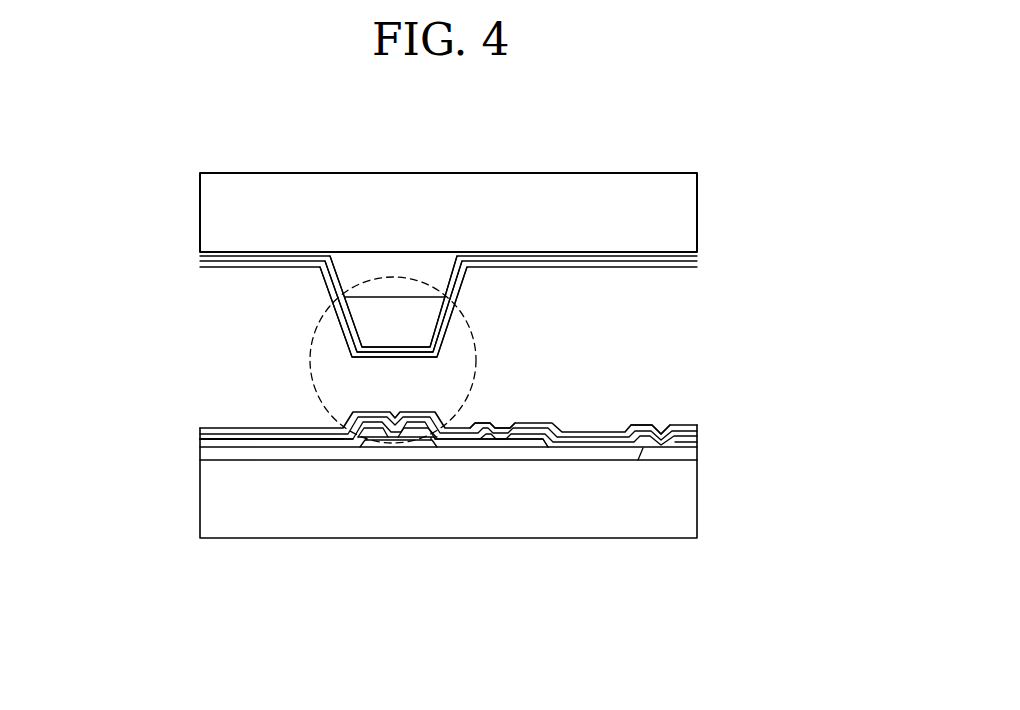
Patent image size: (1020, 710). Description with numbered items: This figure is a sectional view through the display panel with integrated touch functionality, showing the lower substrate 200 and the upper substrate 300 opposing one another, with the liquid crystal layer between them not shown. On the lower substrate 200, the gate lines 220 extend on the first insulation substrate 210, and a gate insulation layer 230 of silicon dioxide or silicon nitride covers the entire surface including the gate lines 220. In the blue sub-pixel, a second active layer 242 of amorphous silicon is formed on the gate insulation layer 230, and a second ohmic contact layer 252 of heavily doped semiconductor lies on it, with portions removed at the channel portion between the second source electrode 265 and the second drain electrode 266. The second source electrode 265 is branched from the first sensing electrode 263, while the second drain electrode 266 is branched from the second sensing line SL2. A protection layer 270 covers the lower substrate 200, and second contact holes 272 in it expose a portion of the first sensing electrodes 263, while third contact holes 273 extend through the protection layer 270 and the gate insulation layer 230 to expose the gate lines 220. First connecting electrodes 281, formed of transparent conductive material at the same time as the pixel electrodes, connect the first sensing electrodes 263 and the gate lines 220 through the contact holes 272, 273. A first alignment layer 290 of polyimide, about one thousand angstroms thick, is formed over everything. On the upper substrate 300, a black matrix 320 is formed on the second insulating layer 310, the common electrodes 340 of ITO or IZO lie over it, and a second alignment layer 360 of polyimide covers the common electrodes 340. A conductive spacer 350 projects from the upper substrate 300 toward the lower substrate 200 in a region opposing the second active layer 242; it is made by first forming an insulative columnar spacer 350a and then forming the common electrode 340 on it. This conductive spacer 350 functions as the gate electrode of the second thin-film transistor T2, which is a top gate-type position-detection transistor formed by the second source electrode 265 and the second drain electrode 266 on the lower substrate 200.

The upper substrate 300 is at (496, 233).
The second insulating layer 310 is at (685, 190).
The black matrix 320 is at (698, 252).
The common electrodes 340 is at (698, 259).
The second alignment layer 360 is at (698, 266).
The conductive spacers 350 is at (290, 302).
The columnar spacers 350a is at (420, 320).
The second thin-film transistor T2 is at (295, 380).
The lower substrate 200 is at (496, 487).
The first insulation substrate 210 is at (690, 522).
The gate lines 220 is at (697, 458).
The gate insulation layer 230 is at (692, 447).
The second sensing lines SL2 is at (235, 445).
The second ohmic contact layer 252 is at (408, 440).
The second active layer 242 is at (377, 447).
The second drain electrodes 266 is at (328, 445).
The second source electrodes 265 is at (445, 445).
The first sensing electrodes 263 is at (505, 445).
The protection layer 270 is at (688, 439).
The first connecting electrodes 281 is at (687, 435).
The first alignment layer 290 is at (680, 425).
The second contact holes 272 is at (498, 414).
The third contact holes 273 is at (665, 412).